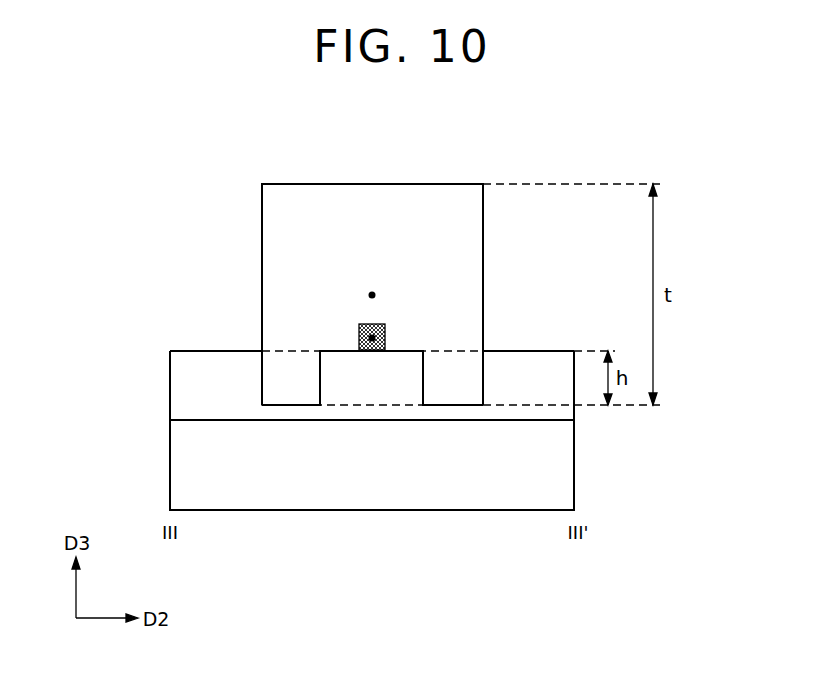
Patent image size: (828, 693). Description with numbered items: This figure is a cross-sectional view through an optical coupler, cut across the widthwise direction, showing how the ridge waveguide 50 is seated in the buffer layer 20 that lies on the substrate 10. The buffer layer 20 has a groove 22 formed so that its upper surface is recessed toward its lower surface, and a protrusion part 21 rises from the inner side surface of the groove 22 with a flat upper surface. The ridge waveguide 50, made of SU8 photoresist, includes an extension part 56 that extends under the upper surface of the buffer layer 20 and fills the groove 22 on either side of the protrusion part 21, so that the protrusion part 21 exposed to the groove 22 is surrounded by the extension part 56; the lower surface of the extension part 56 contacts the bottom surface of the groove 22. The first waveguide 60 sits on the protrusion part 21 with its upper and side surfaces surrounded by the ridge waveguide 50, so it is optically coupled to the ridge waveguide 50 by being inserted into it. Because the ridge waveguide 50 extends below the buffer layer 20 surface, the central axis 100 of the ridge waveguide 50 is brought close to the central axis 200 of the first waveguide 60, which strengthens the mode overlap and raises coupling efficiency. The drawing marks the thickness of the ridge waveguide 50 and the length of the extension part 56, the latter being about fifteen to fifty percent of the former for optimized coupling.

The substrate 10 is at (558, 466).
The buffer layer 20 is at (527, 365).
The protrusion part 21 is at (410, 375).
The groove 22 is at (274, 380).
The ridge waveguide 50 is at (277, 234).
The extension part 56 is at (292, 393).
The first waveguide 60 is at (385, 337).
The central axis of the ridge waveguide 100 is at (372, 295).
The central axis of the first waveguide 200 is at (358, 337).